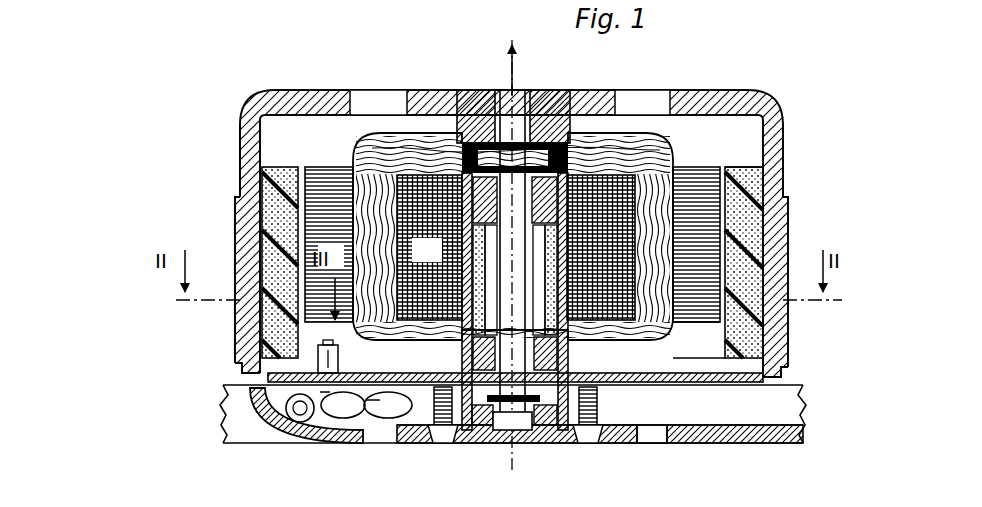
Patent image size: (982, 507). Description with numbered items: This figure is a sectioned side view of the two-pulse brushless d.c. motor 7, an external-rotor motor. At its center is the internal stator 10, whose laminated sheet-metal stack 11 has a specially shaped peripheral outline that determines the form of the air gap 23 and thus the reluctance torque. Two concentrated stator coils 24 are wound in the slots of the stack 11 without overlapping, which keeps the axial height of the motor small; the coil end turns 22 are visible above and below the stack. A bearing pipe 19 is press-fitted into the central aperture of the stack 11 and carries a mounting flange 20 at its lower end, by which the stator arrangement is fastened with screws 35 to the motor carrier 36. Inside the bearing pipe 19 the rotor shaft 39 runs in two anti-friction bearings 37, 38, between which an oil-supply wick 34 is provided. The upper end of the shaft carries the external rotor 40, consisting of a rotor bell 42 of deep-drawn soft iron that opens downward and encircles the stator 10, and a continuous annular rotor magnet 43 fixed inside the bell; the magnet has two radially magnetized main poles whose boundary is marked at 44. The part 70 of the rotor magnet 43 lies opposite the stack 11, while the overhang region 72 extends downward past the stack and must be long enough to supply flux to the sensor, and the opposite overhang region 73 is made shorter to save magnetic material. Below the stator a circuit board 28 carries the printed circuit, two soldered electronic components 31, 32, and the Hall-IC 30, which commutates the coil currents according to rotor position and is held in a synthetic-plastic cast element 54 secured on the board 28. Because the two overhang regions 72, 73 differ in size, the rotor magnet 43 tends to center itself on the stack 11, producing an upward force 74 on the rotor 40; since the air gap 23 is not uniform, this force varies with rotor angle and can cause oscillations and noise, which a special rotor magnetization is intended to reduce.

The two-pulse brushless d.c. motor 7 is at (290, 77).
The internal stator 10 is at (687, 167).
The sheet-metal stack 11 is at (516, 247).
The bearing pipe 19 is at (478, 362).
The mounting flange 20 is at (418, 446).
The winding overhang 22 is at (632, 183).
The air gap 23 is at (300, 210).
The stator coil 24 is at (622, 173).
The circuit board 28 is at (722, 386).
The Hall-IC 30 is at (253, 366).
The electronic component 31 is at (305, 412).
The electronic component 32 is at (362, 422).
The oil-supply wick 34 is at (545, 302).
The screw 35 is at (458, 442).
The motor carrier 36 is at (293, 438).
The anti-friction bearing 37 is at (536, 198).
The anti-friction bearing 38 is at (540, 430).
The shaft 39 is at (512, 255).
The external rotor 40 is at (543, 236).
The rotor bell 42 is at (776, 128).
The rotor magnet 43 is at (770, 186).
The pole boundary 44 is at (774, 368).
The cast element 54 is at (336, 358).
The part of the rotor magnet 70 is at (764, 244).
The overhang region 72 is at (720, 330).
The overhang region 73 is at (736, 178).
The force 74 is at (507, 68).